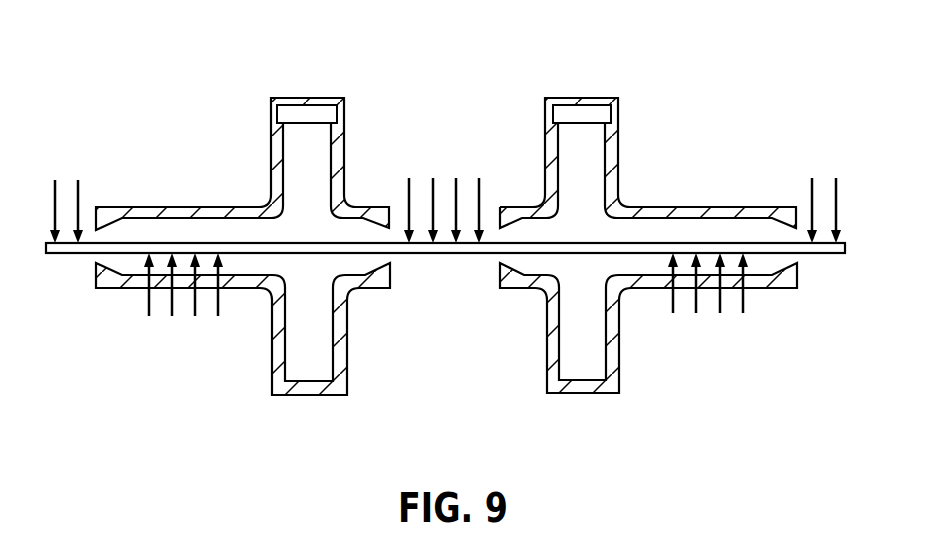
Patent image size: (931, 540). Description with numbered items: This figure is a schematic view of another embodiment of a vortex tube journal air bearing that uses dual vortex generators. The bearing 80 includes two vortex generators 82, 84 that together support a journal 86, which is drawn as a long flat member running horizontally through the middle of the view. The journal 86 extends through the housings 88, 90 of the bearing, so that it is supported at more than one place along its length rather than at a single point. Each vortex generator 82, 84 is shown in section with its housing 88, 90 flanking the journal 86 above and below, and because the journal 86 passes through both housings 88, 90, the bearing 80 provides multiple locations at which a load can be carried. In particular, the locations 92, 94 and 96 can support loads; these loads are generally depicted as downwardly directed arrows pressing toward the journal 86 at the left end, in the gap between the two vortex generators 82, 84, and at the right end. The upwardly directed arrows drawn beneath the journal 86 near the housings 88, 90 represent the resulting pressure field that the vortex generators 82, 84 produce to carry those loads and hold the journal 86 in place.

The bearing 80 is at (120, 88).
The vortex generator 82 is at (344, 162).
The vortex generator 84 is at (618, 158).
The journal 86 is at (413, 255).
The housing 88 is at (142, 207).
The housing 90 is at (643, 207).
The location 92 is at (87, 183).
The location 94 is at (445, 181).
The location 96 is at (804, 183).